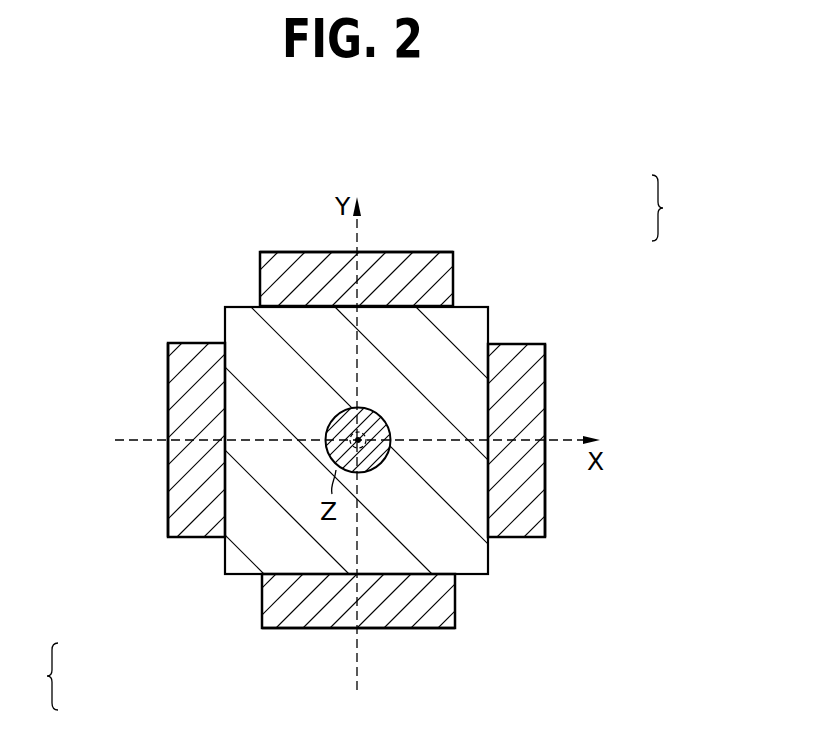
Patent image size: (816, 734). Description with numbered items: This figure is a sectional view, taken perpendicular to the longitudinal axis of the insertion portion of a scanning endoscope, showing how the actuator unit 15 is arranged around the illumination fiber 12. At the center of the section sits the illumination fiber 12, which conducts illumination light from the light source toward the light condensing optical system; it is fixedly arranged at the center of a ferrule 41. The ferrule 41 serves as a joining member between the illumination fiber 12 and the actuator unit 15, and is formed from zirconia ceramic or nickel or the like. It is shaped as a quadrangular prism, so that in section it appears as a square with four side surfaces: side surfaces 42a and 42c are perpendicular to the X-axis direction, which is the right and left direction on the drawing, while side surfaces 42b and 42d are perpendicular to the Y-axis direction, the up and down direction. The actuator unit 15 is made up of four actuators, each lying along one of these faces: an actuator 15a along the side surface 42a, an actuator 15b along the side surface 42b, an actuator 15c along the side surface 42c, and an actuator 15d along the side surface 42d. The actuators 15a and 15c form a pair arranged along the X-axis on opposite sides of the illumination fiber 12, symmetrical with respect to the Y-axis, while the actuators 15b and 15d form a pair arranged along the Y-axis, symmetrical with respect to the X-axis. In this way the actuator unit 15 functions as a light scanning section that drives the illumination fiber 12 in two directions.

The ferrule 41 is at (467, 325).
The illumination fiber 12 is at (377, 408).
The side surface 42a is at (490, 557).
The side surface 42b is at (240, 305).
The side surface 42c is at (225, 323).
The side surface 42d is at (473, 575).
The actuator unit 15 is at (357, 442).
The actuator 15a is at (545, 370).
The actuator 15b is at (430, 252).
The actuator 15c is at (168, 509).
The actuator 15d is at (278, 628).